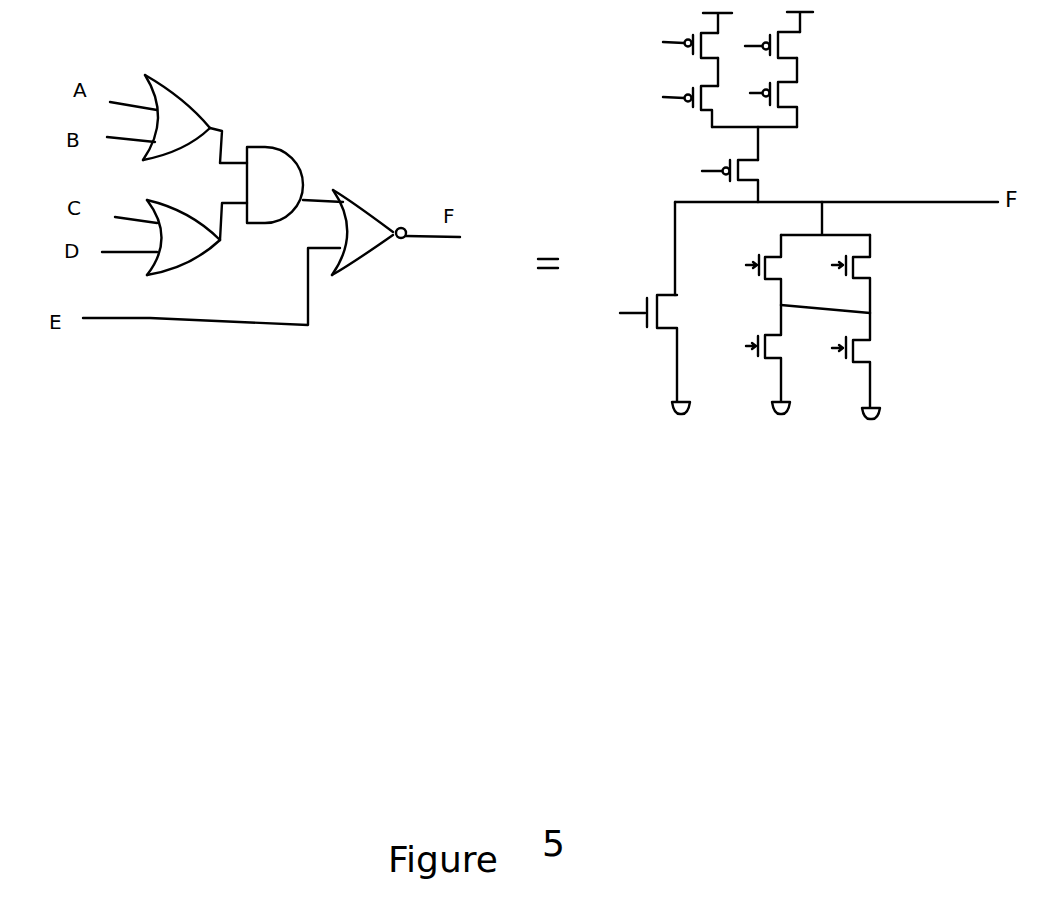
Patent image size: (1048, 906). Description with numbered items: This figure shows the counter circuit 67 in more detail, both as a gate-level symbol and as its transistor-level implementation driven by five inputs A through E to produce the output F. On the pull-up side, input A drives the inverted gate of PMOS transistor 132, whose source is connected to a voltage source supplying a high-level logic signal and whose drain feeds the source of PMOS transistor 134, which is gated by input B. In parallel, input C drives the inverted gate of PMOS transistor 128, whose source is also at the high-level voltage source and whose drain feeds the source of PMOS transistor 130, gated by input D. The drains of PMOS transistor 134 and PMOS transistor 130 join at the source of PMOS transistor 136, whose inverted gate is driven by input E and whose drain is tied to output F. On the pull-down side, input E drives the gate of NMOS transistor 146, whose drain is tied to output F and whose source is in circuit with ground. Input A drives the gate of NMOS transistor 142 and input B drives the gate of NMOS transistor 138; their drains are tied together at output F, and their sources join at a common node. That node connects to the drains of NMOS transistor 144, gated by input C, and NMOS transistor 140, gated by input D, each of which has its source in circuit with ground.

The counter circuit 67 is at (373, 280).
The PMOS transistor 128 is at (790, 48).
The PMOS transistor 130 is at (803, 97).
The PMOS transistor 132 is at (673, 52).
The PMOS transistor 134 is at (706, 111).
The PMOS transistor 136 is at (762, 172).
The NMOS transistor 138 is at (882, 268).
The NMOS transistor 140 is at (888, 358).
The NMOS transistor 142 is at (765, 250).
The NMOS transistor 144 is at (758, 367).
The NMOS transistor 146 is at (655, 293).